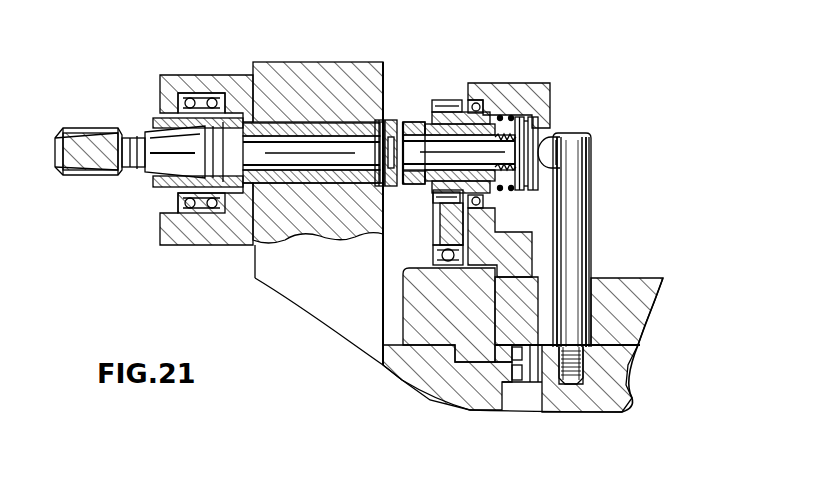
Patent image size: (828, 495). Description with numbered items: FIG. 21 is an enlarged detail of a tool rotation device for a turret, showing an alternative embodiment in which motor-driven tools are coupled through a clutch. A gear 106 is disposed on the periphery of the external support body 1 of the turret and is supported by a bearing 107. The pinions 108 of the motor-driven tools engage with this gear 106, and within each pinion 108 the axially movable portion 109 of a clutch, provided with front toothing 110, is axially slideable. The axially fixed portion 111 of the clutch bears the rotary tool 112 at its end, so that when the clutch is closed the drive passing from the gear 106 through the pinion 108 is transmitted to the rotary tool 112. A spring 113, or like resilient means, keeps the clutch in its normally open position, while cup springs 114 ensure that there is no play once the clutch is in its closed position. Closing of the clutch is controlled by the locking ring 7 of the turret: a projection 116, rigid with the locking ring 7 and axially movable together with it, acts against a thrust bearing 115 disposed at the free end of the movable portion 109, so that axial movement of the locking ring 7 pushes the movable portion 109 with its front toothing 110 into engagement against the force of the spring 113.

The external support body 1 is at (612, 303).
The locking ring 7 is at (583, 388).
The gear 106 is at (437, 232).
The bearing 107 is at (433, 251).
The pinion 108 is at (446, 100).
The axially movable portion of clutch 109 is at (477, 140).
The front toothing 110 is at (404, 100).
The axially fixed portion of clutch 111 is at (292, 147).
The rotary tool 112 is at (103, 155).
The spring 113 is at (501, 188).
The cup springs 114 is at (542, 130).
The rounded end of cylinder 115 is at (541, 152).
The projection 116 is at (573, 178).